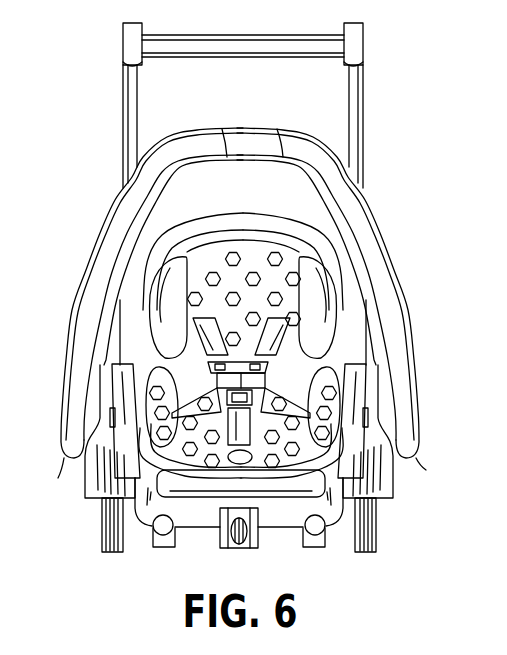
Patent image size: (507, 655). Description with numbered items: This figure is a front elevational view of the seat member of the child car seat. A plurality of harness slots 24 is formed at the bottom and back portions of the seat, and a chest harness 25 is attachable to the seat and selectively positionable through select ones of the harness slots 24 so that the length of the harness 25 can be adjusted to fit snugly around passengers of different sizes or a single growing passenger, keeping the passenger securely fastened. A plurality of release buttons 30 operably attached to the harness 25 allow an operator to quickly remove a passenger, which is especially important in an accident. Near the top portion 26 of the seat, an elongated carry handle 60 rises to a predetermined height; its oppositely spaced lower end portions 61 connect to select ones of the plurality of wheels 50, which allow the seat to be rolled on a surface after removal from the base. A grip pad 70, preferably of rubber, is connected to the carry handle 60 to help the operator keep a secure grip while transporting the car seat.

The harness slots 24 is at (272, 366).
The chest harness 25 is at (148, 370).
The top portion 26 is at (262, 210).
The release buttons 30 is at (165, 340).
The wheels 50 is at (110, 553).
The carry handle 60 is at (112, 198).
The lower end portions 61 is at (63, 462).
The grip pad 70 is at (236, 128).